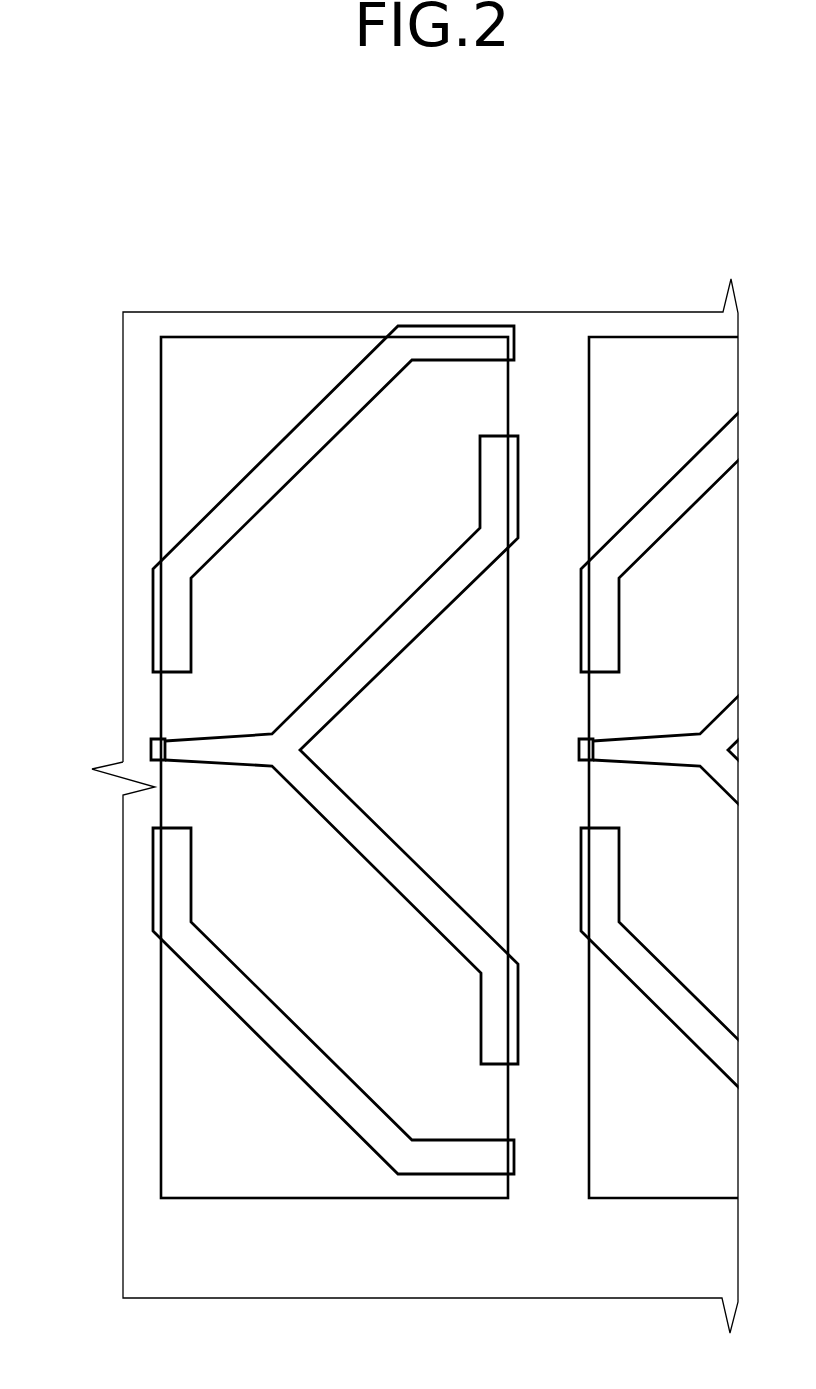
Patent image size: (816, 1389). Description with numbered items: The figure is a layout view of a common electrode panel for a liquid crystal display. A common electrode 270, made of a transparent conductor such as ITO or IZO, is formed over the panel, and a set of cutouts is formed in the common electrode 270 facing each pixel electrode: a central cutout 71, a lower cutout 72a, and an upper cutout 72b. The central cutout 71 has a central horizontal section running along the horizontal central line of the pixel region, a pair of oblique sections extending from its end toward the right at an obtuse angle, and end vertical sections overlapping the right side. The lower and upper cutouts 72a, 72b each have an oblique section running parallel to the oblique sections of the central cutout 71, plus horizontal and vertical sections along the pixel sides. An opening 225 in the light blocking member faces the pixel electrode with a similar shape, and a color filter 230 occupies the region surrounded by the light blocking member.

The central cutout 71 is at (332, 840).
The lower cutout 72a is at (323, 1036).
The upper cutout 72b is at (327, 460).
The opening 225 is at (350, 1198).
The color filter 230 is at (245, 1280).
The common electrode 270 is at (468, 1298).